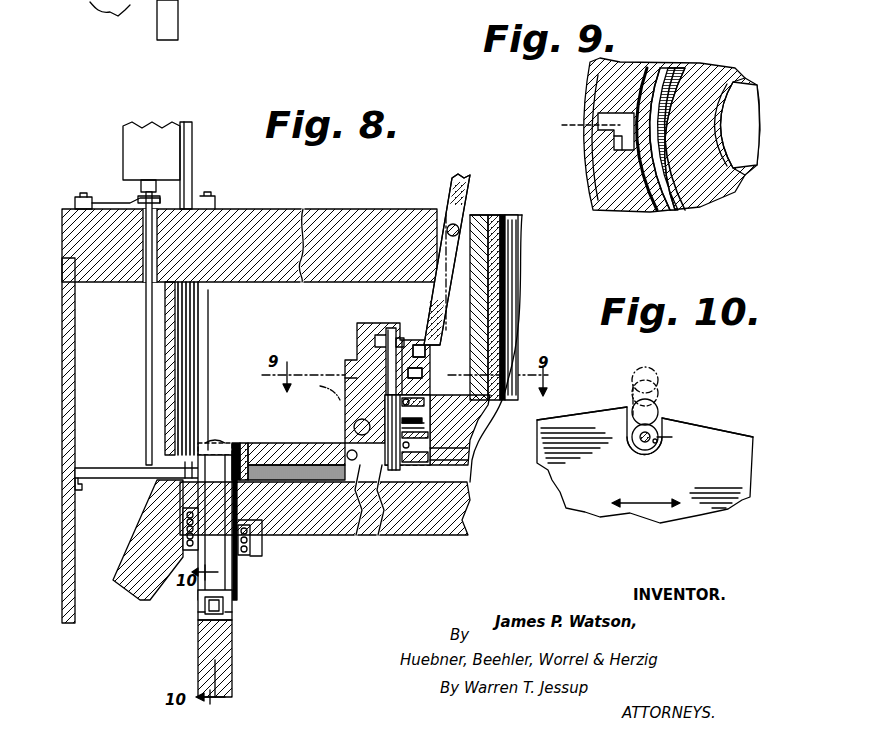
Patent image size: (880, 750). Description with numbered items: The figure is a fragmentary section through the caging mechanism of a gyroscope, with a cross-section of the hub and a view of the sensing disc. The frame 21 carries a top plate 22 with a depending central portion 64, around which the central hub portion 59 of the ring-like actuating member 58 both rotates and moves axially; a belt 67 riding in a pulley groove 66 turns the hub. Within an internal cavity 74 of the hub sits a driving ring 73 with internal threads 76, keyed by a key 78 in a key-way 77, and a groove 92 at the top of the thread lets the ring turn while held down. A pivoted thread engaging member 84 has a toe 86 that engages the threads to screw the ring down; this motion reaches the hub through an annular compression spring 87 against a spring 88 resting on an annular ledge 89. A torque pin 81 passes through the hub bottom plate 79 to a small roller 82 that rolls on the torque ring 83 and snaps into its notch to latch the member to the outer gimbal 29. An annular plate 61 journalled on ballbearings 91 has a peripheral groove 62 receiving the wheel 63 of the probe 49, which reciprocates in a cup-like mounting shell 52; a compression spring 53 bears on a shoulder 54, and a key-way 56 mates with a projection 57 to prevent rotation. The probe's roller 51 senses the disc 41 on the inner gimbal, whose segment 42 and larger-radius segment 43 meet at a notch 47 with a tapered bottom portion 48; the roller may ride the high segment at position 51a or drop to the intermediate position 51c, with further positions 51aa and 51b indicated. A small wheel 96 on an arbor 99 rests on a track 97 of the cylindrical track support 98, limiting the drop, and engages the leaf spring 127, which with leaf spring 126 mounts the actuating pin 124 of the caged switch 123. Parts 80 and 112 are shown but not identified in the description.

In FIG. 8, the frame 21 is at (62, 422).
In FIG. 8, the top plate 22 is at (278, 218).
In FIG. 8, the outer gimbal 29 is at (467, 520).
In FIG. 8, the disc 41 is at (232, 668).
In FIG. 10, the disc 41 is at (715, 440).
In FIG. 10, the segment 42 is at (680, 416).
In FIG. 10, the segment 43 is at (595, 414).
In FIG. 8, the notch 47 is at (205, 620).
In FIG. 10, the notch 47 is at (628, 424).
In FIG. 10, the tapered bottom portion 48 is at (679, 437).
In FIG. 8, the probe 49 is at (208, 500).
In FIG. 8, the roller 51 is at (232, 626).
In FIG. 10, the roller 51 is at (637, 446).
In FIG. 10, the roller position 51a is at (657, 392).
In FIG. 10, the roller position 51aa is at (652, 372).
In FIG. 10, the roller path 51b is at (630, 406).
In FIG. 10, the intermediate roller position 51c is at (657, 408).
In FIG. 8, the mounting shell 52 is at (262, 536).
In FIG. 8, the compression spring 53 is at (160, 535).
In FIG. 8, the shoulder 54 is at (186, 518).
In FIG. 8, the key-way 56 is at (238, 565).
In FIG. 8, the projection 57 is at (250, 548).
In FIG. 8, the actuating member 58 is at (322, 332).
In FIG. 8, the central hub portion 59 is at (362, 330).
In FIG. 9, the central hub portion 59 is at (605, 80).
In FIG. 8, the annular plate 61 is at (300, 443).
In FIG. 8, the peripheral groove 62 is at (236, 445).
In FIG. 8, the wheel 63 is at (252, 445).
In FIG. 8, the central portion 64 is at (480, 293).
In FIG. 9, the central portion 64 is at (718, 82).
In FIG. 8, the pulley groove 66 is at (326, 386).
In FIG. 8, the belt 67 is at (356, 424).
In FIG. 8, the driving ring 73 is at (425, 346).
In FIG. 9, the driving ring 73 is at (648, 70).
In FIG. 8, the internal cavity 74 is at (450, 432).
In FIG. 8, the internal threads 76 is at (422, 370).
In FIG. 9, the internal threads 76 is at (670, 72).
In FIG. 8, the key-way 77 is at (390, 328).
In FIG. 9, the key-way 77 is at (614, 144).
In FIG. 8, the key 78 is at (357, 372).
In FIG. 9, the key 78 is at (612, 113).
In FIG. 8, the bottom plate 79 is at (440, 462).
In FIG. 8, the shaft 80 is at (394, 432).
In FIG. 8, the torque pin 81 is at (388, 455).
In FIG. 9, the torque pin 81 is at (579, 122).
In FIG. 8, the roller 82 is at (356, 535).
In FIG. 8, the torque ring 83 is at (378, 535).
In FIG. 8, the thread engaging member 84 is at (492, 262).
In FIG. 8, the toe 86 is at (416, 328).
In FIG. 8, the annular compression spring 87 is at (455, 447).
In FIG. 8, the spring 88 is at (455, 403).
In FIG. 8, the annular ledge 89 is at (455, 417).
In FIG. 8, the ballbearings 91 is at (350, 450).
In FIG. 8, the groove 92 is at (404, 336).
In FIG. 8, the wheel 96 is at (162, 468).
In FIG. 8, the track 97 is at (188, 478).
In FIG. 8, the track support 98 is at (168, 330).
In FIG. 8, the arbor 99 is at (204, 443).
In FIG. 8, the lever 112 is at (448, 212).
In FIG. 8, the caged switch 123 is at (158, 124).
In FIG. 8, the actuating pin 124 is at (146, 300).
In FIG. 8, the leaf spring 126 is at (112, 199).
In FIG. 8, the leaf spring 127 is at (92, 468).